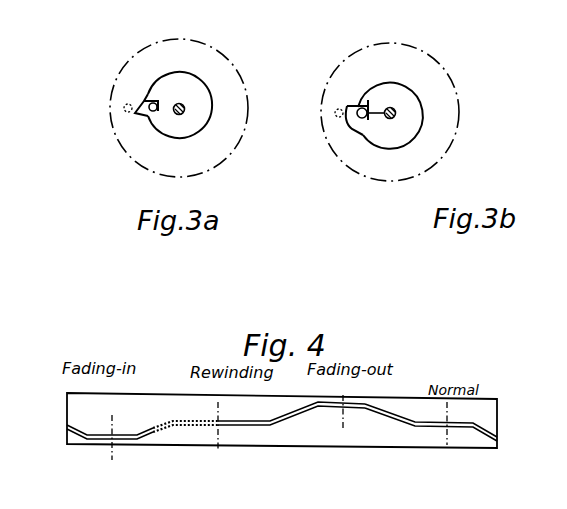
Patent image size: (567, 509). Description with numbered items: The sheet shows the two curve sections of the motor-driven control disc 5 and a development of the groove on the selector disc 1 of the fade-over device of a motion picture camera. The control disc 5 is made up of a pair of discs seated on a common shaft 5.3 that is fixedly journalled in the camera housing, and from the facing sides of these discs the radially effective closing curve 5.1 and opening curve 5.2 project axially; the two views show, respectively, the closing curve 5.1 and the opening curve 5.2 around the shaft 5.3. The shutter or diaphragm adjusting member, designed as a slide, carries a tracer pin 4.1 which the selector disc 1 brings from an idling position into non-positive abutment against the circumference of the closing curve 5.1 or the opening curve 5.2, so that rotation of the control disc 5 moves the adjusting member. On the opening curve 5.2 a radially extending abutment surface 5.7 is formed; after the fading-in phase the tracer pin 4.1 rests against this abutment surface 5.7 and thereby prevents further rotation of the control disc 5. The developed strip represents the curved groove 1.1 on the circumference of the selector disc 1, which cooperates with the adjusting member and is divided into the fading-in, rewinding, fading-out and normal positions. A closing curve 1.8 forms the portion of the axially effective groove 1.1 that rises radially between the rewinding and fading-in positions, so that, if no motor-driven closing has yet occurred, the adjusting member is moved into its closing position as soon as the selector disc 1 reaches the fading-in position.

In FIG. 3A, the control disc 5 is at (220, 72).
In FIG. 3B, the control disc 5 is at (347, 70).
In FIG. 3A, the closing curve 5.1 is at (170, 85).
In FIG. 3B, the opening curve 5.2 is at (410, 117).
In FIG. 3A, the common shaft 5.3 is at (187, 113).
In FIG. 3B, the common shaft 5.3 is at (347, 104).
In FIG. 3A, the tracer pin 4.1 is at (153, 112).
In FIG. 3B, the tracer pin 4.1 is at (368, 102).
In FIG. 3B, the abutment surface 5.7 is at (360, 128).
In FIG. 4, the selector disc 1 is at (85, 412).
In FIG. 4, the closing curve 1.8 is at (190, 427).
In FIG. 4, the curved groove 1.1 is at (392, 412).